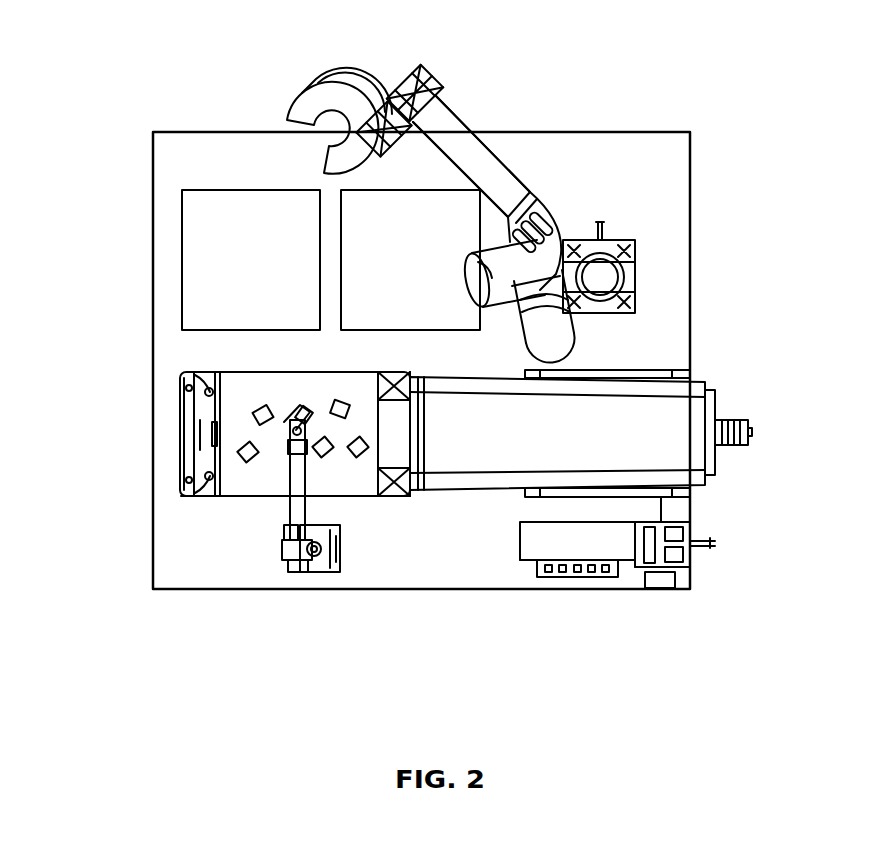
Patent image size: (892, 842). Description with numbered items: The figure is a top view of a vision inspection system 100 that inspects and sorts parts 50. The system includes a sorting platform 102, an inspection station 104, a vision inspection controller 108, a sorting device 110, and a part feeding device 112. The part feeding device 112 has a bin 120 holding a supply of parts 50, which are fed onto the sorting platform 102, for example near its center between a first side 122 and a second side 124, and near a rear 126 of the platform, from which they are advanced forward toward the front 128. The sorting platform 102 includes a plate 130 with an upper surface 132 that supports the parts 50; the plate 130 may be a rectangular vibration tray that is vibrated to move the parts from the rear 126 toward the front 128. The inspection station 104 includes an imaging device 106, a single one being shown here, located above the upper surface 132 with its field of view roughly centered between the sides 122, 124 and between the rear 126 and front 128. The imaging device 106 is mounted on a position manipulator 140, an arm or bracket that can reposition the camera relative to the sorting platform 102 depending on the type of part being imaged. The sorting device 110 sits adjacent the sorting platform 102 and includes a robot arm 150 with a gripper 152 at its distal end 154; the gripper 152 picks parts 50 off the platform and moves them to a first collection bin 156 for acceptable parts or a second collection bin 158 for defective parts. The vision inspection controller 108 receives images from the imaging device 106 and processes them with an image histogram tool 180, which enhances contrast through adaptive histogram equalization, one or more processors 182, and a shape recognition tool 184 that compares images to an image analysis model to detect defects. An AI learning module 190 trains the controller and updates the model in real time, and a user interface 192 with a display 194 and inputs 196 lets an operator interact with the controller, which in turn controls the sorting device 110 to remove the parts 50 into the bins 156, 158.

The vision inspection system 100 is at (563, 72).
The sorting platform 102 is at (238, 486).
The inspection station 104 is at (344, 544).
The imaging device 106 is at (306, 574).
The vision inspection controller 108 is at (686, 533).
The sorting device 110 is at (545, 197).
The part feeding device 112 is at (650, 415).
The bin 120 is at (585, 420).
The first side 122 is at (253, 497).
The second side 124 is at (253, 372).
The rear 126 is at (365, 498).
The front 128 is at (210, 452).
The plate 130 is at (237, 405).
The upper surface 132 is at (245, 437).
The position manipulator 140 is at (293, 510).
The robot arm 150 is at (457, 138).
The gripper 152 is at (293, 95).
The distal end 154 is at (400, 92).
The first collection bin 156 is at (192, 283).
The second collection bin 158 is at (355, 227).
The image histogram tool 180 is at (686, 524).
The processor 182 is at (647, 562).
The shape recognition tool 184 is at (683, 552).
The AI learning module 190 is at (680, 588).
The user interface 192 is at (528, 562).
The display 194 is at (553, 550).
The inputs 196 is at (592, 577).
The parts 50 is at (322, 457).